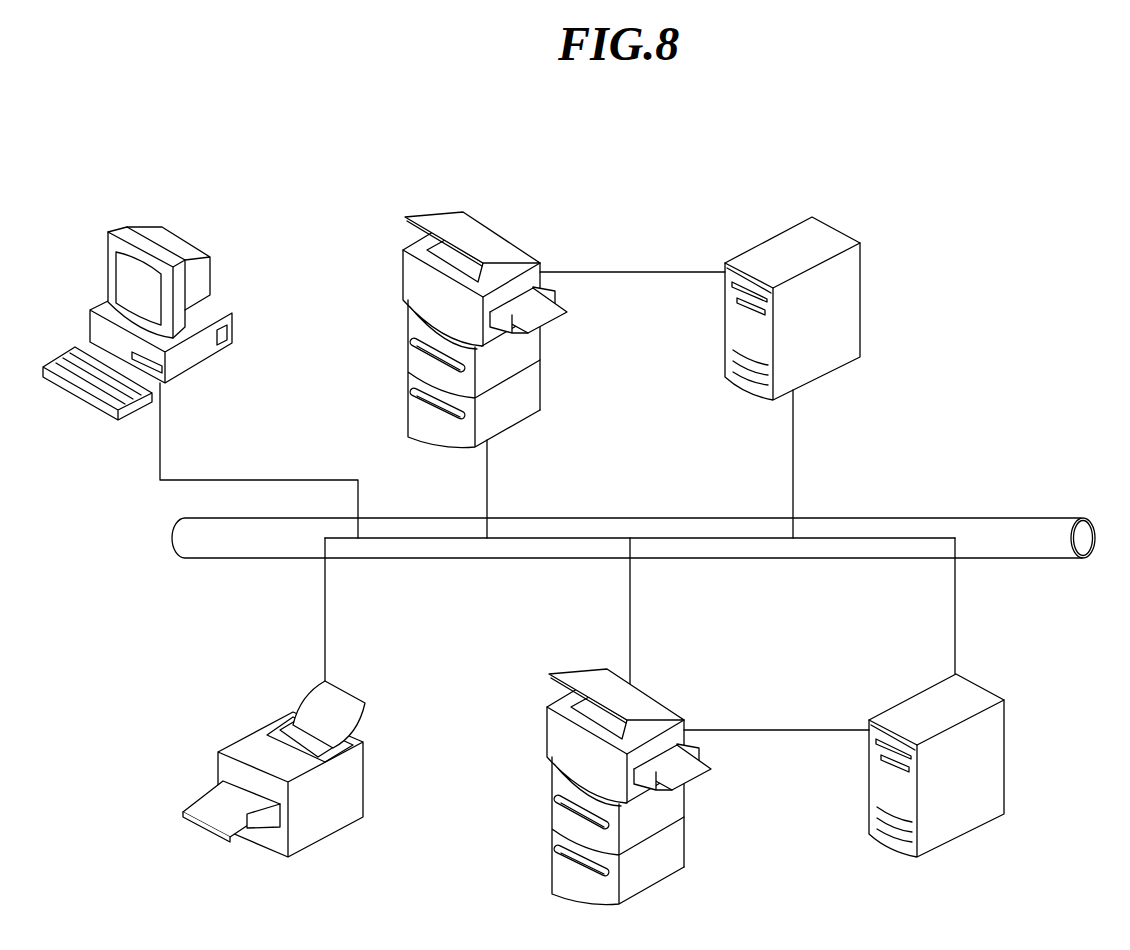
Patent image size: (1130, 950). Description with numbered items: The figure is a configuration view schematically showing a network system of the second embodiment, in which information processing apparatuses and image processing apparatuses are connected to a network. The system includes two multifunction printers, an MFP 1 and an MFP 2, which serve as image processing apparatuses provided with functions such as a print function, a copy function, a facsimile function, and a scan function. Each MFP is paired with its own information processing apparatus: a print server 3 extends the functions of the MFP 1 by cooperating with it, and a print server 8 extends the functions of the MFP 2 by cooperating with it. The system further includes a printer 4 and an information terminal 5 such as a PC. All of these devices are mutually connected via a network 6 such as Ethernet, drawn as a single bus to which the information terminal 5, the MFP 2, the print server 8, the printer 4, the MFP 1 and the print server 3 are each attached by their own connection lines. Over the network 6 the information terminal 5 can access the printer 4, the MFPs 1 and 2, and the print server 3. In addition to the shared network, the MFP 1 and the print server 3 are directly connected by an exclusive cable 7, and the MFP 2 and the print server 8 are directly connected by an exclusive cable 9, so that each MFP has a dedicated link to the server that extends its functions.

The multifunction printer 1 is at (683, 809).
The multifunction printer 2 is at (542, 352).
The print server 3 is at (1005, 758).
The printer 4 is at (363, 793).
The information terminal 5 is at (233, 327).
The network 6 is at (1005, 518).
The exclusive cable 7 is at (765, 729).
The print server 8 is at (860, 300).
The exclusive cable 9 is at (622, 271).